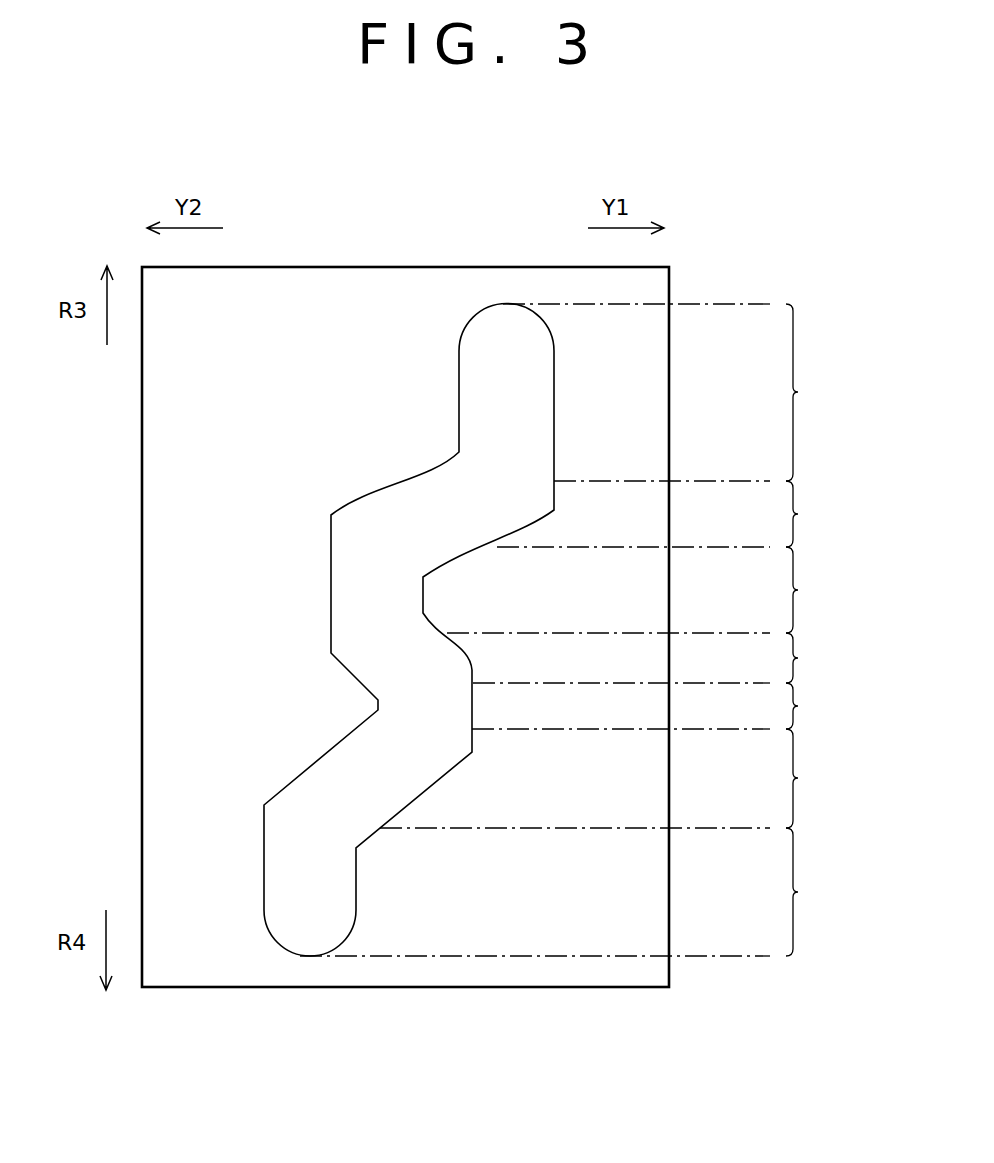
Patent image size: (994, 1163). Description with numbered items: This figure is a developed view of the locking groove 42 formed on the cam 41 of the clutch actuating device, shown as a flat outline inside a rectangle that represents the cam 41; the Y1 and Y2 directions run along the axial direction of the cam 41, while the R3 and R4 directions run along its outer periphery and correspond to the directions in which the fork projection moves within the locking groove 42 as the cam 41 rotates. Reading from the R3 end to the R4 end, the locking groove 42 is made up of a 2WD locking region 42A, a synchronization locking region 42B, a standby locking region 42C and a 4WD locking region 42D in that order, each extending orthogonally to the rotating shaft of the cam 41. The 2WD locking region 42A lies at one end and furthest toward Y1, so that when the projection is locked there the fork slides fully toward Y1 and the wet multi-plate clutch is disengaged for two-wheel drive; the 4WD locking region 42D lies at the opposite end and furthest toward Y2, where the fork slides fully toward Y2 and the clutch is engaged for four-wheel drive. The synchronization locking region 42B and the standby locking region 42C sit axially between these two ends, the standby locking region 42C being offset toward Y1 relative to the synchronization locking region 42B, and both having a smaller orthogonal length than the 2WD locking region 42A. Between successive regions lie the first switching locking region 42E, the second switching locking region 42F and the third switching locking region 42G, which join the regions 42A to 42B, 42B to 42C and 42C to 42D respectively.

The cam 41 is at (189, 994).
The locking groove 42 is at (285, 956).
The 2WD locking region 42A is at (823, 392).
The synchronization locking region 42B is at (823, 590).
The standby locking region 42C is at (823, 706).
The 4WD locking region 42D is at (824, 892).
The first switching locking region 42E is at (822, 514).
The second switching locking region 42F is at (821, 658).
The third switching locking region 42G is at (824, 778).